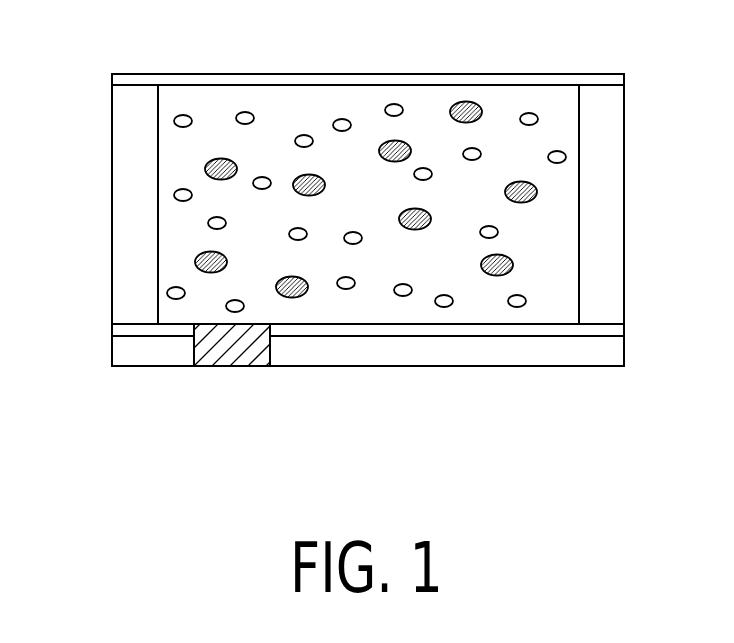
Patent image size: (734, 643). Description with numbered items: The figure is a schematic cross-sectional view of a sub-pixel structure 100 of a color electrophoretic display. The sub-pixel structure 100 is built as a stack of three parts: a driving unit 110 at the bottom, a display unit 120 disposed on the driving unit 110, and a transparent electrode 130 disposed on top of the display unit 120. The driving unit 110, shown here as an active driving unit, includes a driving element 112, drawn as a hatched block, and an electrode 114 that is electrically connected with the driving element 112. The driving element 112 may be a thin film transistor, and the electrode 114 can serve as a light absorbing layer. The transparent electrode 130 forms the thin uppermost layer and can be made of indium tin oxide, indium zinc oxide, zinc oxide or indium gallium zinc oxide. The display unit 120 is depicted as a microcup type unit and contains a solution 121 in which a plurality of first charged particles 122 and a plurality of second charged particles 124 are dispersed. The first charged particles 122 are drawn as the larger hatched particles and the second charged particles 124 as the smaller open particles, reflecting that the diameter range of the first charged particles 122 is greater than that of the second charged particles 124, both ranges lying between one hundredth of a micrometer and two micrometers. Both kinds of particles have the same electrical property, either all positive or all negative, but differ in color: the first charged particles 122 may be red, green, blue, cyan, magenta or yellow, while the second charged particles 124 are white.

The sub-pixel structure 100 is at (687, 433).
The driving unit 110 is at (367, 443).
The driving element 112 is at (233, 367).
The electrode 114 is at (312, 330).
The display unit 120 is at (174, 213).
The solution 121 is at (178, 151).
The first charged particles 122 is at (225, 159).
The second charged particles 124 is at (343, 119).
The transparent electrode 130 is at (113, 81).